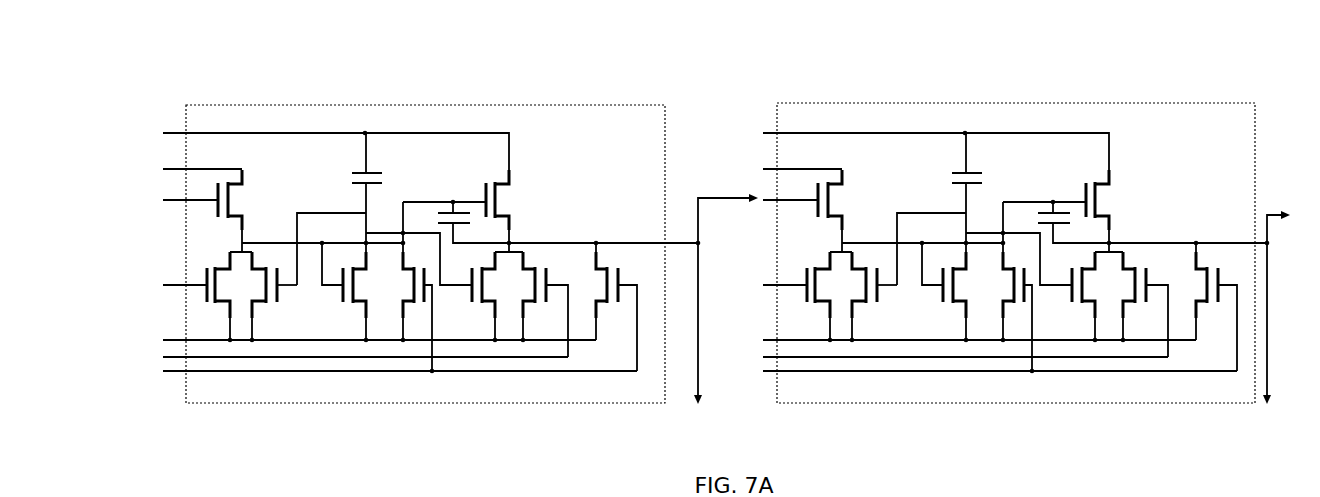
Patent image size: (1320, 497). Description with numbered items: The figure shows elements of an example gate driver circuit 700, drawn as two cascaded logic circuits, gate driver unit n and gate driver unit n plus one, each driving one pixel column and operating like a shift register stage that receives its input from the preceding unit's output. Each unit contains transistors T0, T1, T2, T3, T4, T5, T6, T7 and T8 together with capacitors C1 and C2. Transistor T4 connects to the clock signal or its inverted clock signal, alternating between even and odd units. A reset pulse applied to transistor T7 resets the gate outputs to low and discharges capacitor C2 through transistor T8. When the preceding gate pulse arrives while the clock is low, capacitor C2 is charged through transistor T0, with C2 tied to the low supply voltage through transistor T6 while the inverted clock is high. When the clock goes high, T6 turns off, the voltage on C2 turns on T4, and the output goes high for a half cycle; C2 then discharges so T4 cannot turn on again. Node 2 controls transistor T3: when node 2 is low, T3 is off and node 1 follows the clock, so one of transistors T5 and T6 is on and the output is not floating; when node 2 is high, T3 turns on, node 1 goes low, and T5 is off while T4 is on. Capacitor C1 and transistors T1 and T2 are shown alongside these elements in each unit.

The elements of the example gate driver circuit 700 is at (1046, 113).
The transistor T0 is at (536, 200).
The transistor T1 is at (520, 285).
The transistor T2 is at (561, 285).
The transistor T3 is at (660, 285).
The transistor T4 is at (804, 200).
The transistor T5 is at (787, 285).
The transistor T6 is at (830, 285).
The transistor T7 is at (903, 285).
The transistor T8 is at (708, 285).
The capacitor C1 is at (655, 181).
The capacitor C2 is at (743, 221).
The node 1 is at (631, 242).
The node 2 is at (741, 218).